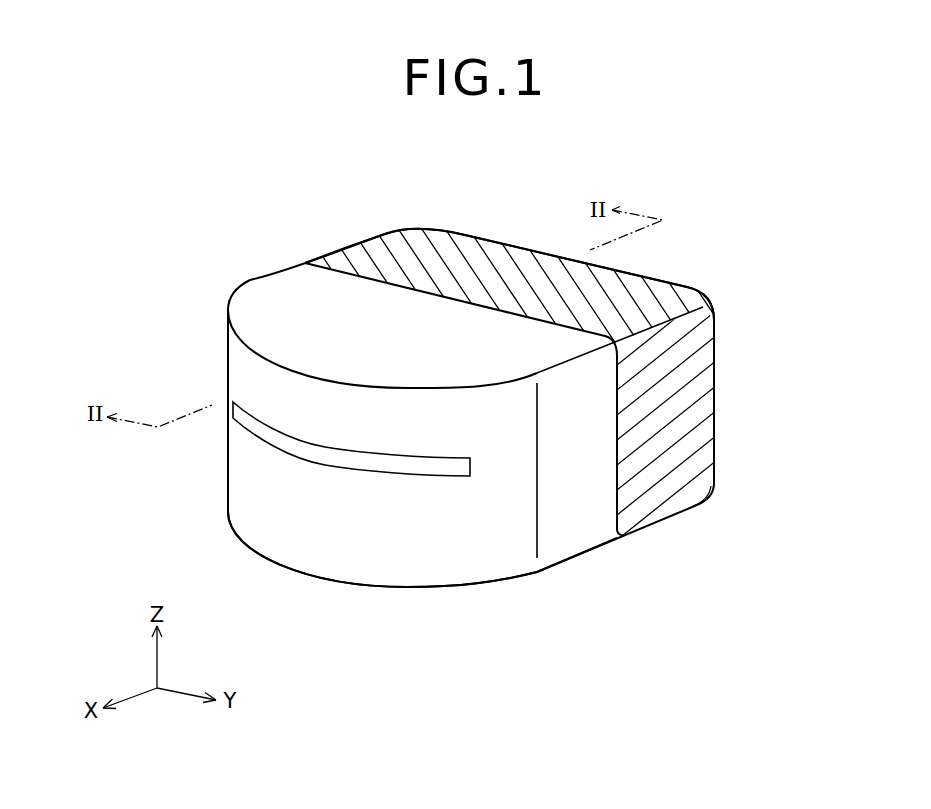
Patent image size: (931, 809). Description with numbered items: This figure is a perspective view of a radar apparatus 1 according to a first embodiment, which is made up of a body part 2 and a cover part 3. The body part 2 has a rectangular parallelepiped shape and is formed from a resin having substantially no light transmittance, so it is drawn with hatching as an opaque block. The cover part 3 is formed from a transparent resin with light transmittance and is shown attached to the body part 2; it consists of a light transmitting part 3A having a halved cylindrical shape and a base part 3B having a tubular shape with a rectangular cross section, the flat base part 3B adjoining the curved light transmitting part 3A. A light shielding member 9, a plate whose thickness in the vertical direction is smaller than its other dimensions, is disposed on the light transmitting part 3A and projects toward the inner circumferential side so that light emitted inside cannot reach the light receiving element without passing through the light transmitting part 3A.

The radar apparatus 1 is at (703, 198).
The body part 2 is at (610, 285).
The cover part 3 is at (227, 440).
The light transmitting part 3A is at (336, 515).
The base part 3B is at (570, 503).
The light shielding member 9 is at (382, 467).